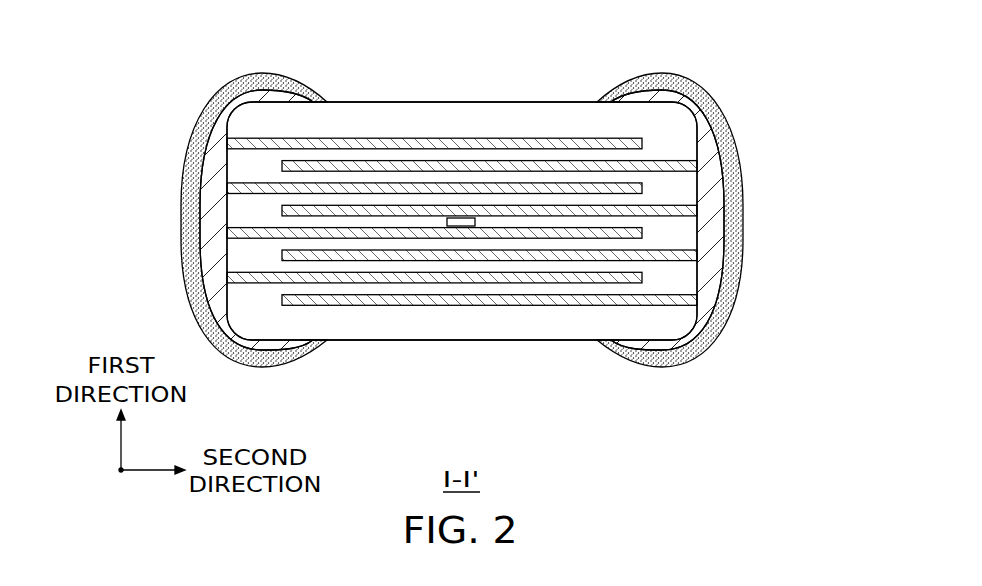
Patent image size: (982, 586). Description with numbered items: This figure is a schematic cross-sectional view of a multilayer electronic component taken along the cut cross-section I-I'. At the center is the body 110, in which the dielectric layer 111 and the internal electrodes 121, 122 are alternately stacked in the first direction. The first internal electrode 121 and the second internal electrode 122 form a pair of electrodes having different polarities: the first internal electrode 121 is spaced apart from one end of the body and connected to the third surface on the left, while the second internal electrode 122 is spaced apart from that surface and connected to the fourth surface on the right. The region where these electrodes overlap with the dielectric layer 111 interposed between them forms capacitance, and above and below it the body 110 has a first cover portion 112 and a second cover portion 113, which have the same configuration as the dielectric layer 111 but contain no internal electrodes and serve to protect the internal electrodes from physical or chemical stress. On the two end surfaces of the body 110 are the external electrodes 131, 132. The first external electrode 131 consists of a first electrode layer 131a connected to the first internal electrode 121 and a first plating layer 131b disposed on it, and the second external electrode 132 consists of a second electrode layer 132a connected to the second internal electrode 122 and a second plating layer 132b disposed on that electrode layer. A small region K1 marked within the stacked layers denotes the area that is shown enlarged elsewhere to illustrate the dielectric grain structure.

The body 110 is at (388, 102).
The dielectric layer 111 is at (328, 172).
The first cover portion 112 is at (475, 118).
The second cover portion 113 is at (478, 340).
The first internal electrode 121 is at (523, 138).
The second internal electrode 122 is at (575, 162).
The first external electrode 131 is at (187, 220).
The first electrode layer 131a is at (203, 190).
The first plating layer 131b is at (188, 220).
The second external electrode 132 is at (735, 220).
The second electrode layer 132a is at (712, 188).
The second plating layer 132b is at (732, 222).
The region K1 is at (475, 222).